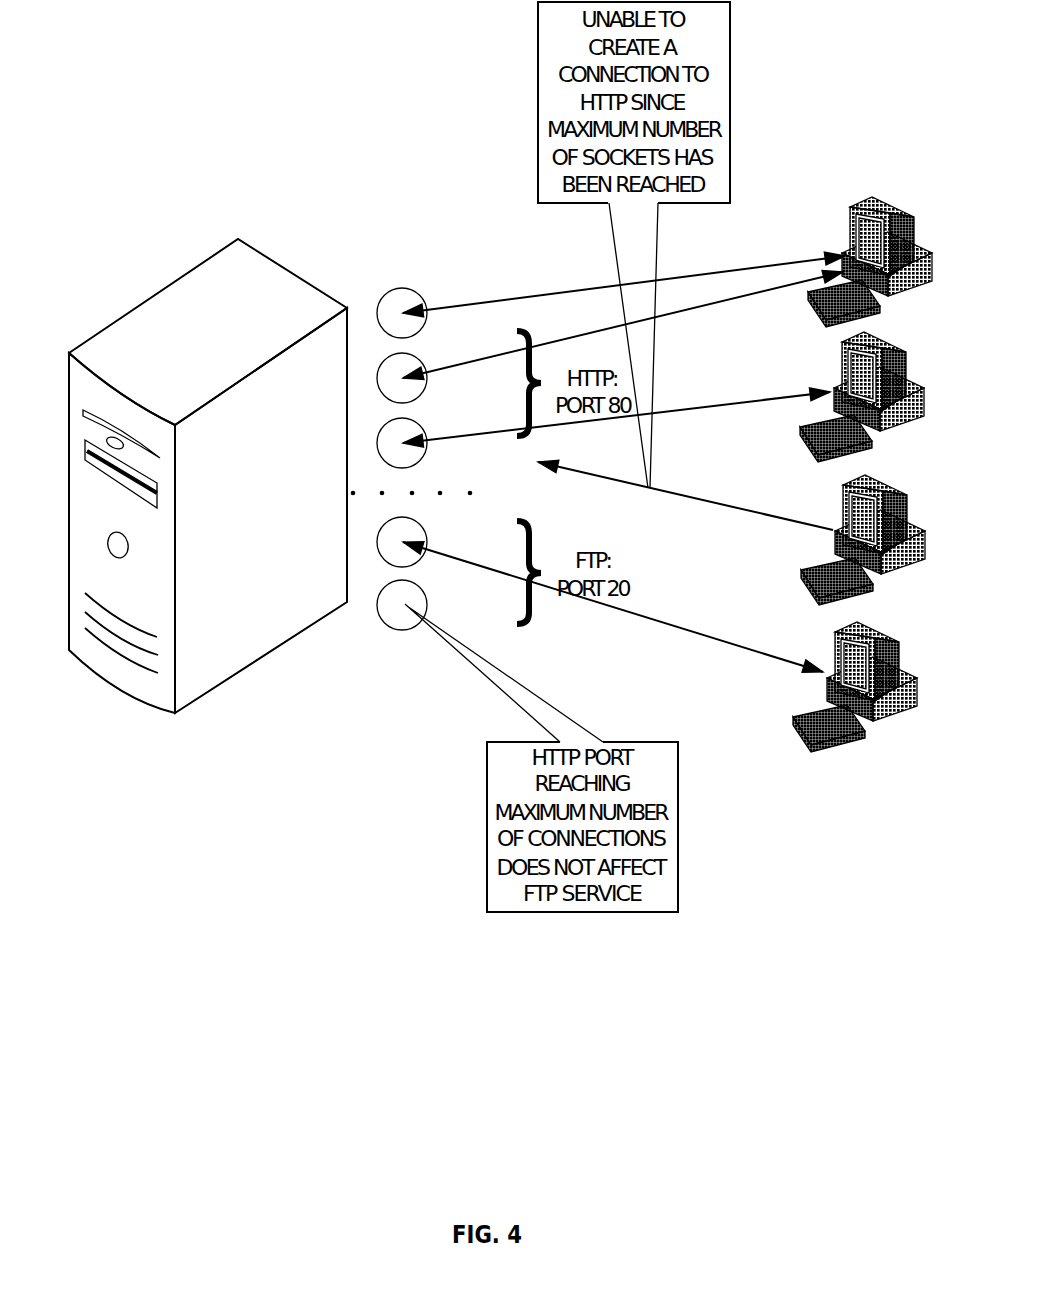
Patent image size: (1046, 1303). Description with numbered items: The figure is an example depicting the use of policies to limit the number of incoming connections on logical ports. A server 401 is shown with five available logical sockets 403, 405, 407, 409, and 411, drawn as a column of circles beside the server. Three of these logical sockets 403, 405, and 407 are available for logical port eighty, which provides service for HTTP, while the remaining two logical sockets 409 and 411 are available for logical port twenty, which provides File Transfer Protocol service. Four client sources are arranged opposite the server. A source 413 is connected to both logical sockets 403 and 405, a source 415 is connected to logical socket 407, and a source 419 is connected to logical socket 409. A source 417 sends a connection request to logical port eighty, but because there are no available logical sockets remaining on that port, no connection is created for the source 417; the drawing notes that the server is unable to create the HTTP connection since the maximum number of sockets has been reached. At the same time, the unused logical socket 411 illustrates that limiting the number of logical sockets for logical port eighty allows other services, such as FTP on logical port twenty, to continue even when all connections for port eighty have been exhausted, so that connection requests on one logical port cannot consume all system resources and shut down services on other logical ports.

The server 401 is at (120, 322).
The logical socket 403 is at (428, 302).
The logical socket 405 is at (428, 386).
The logical socket 407 is at (428, 453).
The logical socket 409 is at (428, 538).
The logical socket 411 is at (428, 600).
The source 413 is at (876, 202).
The source 415 is at (796, 427).
The source 417 is at (813, 563).
The source 419 is at (870, 738).